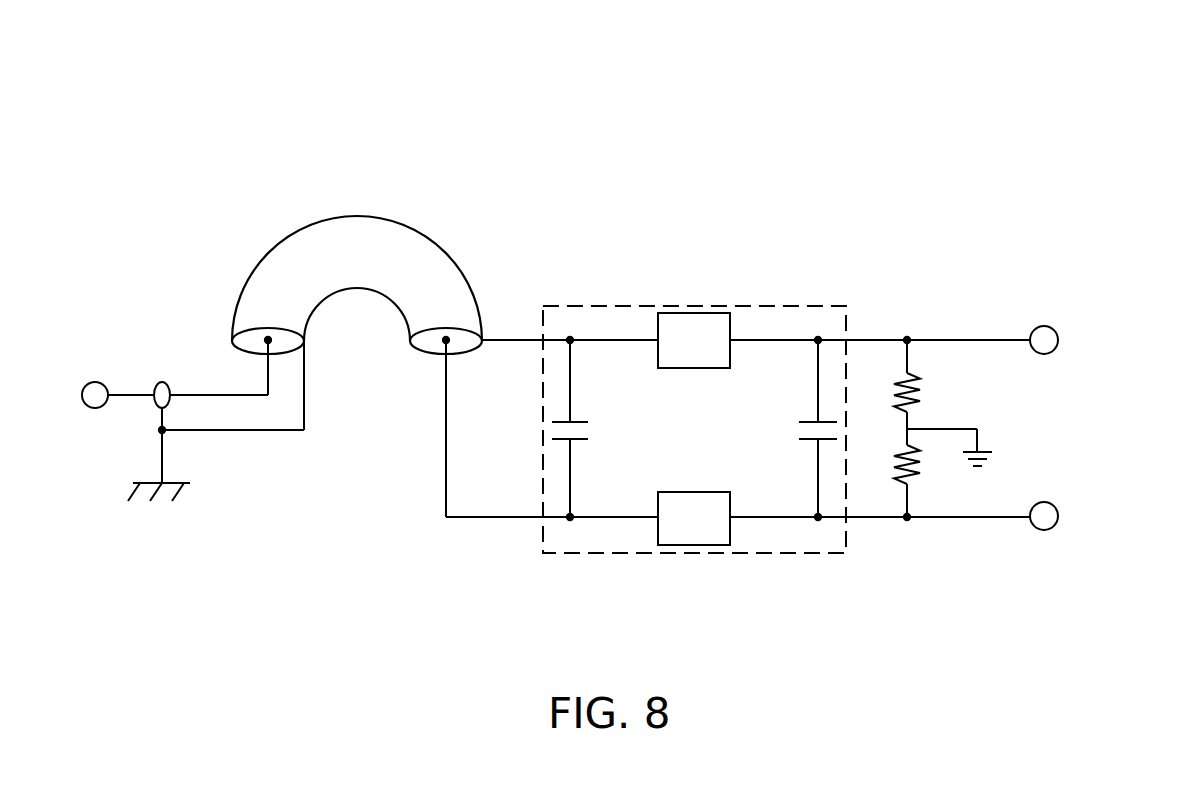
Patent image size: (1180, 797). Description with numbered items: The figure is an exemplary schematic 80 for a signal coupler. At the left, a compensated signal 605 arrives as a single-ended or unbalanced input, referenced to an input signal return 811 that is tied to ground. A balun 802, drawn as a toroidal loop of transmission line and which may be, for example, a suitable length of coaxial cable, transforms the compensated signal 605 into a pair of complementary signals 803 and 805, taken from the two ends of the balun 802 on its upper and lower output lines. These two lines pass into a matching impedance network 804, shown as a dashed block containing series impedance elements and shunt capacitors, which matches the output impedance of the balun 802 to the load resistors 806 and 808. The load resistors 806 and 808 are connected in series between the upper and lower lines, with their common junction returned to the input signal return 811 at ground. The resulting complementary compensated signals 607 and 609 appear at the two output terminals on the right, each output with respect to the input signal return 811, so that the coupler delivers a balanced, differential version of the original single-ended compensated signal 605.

The schematic 80 is at (690, 125).
The compensated signal 605 is at (127, 393).
The complementary compensated signal 607 is at (1057, 330).
The complementary compensated signal 609 is at (1057, 525).
The balun 802 is at (407, 227).
The complementary signal 803 is at (500, 337).
The matching impedance network 804 is at (677, 303).
The complementary signal 805 is at (502, 520).
The load resistor 806 is at (922, 392).
The load resistor 808 is at (922, 457).
The input signal return 811 is at (242, 432).